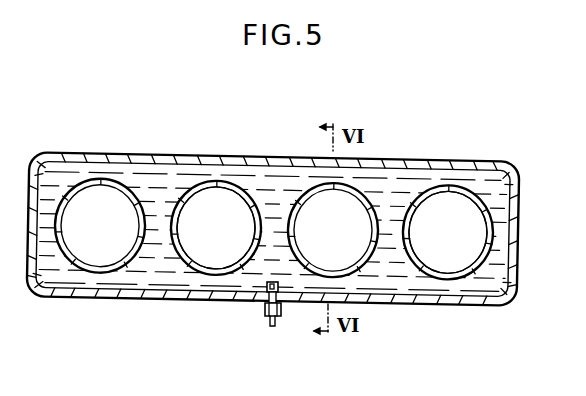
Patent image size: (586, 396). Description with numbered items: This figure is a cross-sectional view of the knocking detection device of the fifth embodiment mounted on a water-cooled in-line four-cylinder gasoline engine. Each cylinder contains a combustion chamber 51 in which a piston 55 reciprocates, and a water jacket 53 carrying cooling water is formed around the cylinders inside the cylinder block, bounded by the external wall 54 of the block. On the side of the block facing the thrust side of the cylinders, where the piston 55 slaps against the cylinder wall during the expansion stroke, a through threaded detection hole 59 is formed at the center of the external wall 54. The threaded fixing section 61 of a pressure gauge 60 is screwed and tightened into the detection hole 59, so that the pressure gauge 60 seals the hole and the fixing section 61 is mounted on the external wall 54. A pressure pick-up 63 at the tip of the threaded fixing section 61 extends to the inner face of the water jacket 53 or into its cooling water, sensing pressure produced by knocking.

The combustion chamber 51 is at (448, 217).
The water jacket 53 is at (147, 272).
The external wall 54 is at (180, 299).
The piston 55 is at (205, 198).
The detection hole 59 is at (264, 303).
The pressure gauge 60 is at (256, 309).
The threaded fixing section 61 is at (281, 307).
The pressure pick-up 63 is at (279, 287).